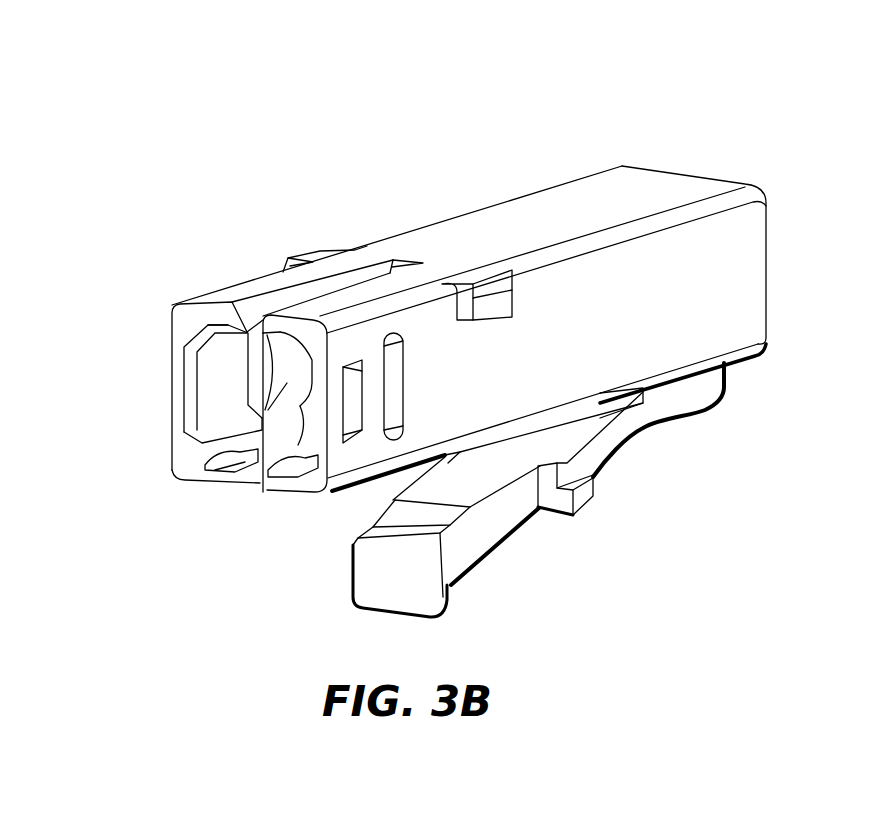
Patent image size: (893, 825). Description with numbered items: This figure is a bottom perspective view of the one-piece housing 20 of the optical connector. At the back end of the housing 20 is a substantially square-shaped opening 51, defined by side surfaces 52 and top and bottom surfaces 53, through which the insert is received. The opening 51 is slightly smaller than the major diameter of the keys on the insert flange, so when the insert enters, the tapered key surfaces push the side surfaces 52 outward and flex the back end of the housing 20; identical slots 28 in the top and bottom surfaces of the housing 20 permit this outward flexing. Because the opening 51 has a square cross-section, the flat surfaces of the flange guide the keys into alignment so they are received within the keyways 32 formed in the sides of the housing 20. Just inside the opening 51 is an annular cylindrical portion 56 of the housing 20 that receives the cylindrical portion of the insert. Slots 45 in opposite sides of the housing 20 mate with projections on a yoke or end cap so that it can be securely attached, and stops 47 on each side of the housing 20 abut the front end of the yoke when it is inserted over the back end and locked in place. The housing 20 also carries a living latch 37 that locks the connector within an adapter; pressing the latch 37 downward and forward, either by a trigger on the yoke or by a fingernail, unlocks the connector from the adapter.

The one-piece housing 20 is at (684, 77).
The slots 28 is at (367, 268).
The keyways 32 is at (402, 378).
The latch 37 is at (490, 527).
The slots 45 is at (355, 402).
The stops 47 is at (318, 253).
The opening 51 is at (222, 401).
The side surfaces 52 is at (215, 362).
The top and bottom surfaces 53 is at (246, 338).
The annular cylindrical portion 56 is at (222, 448).